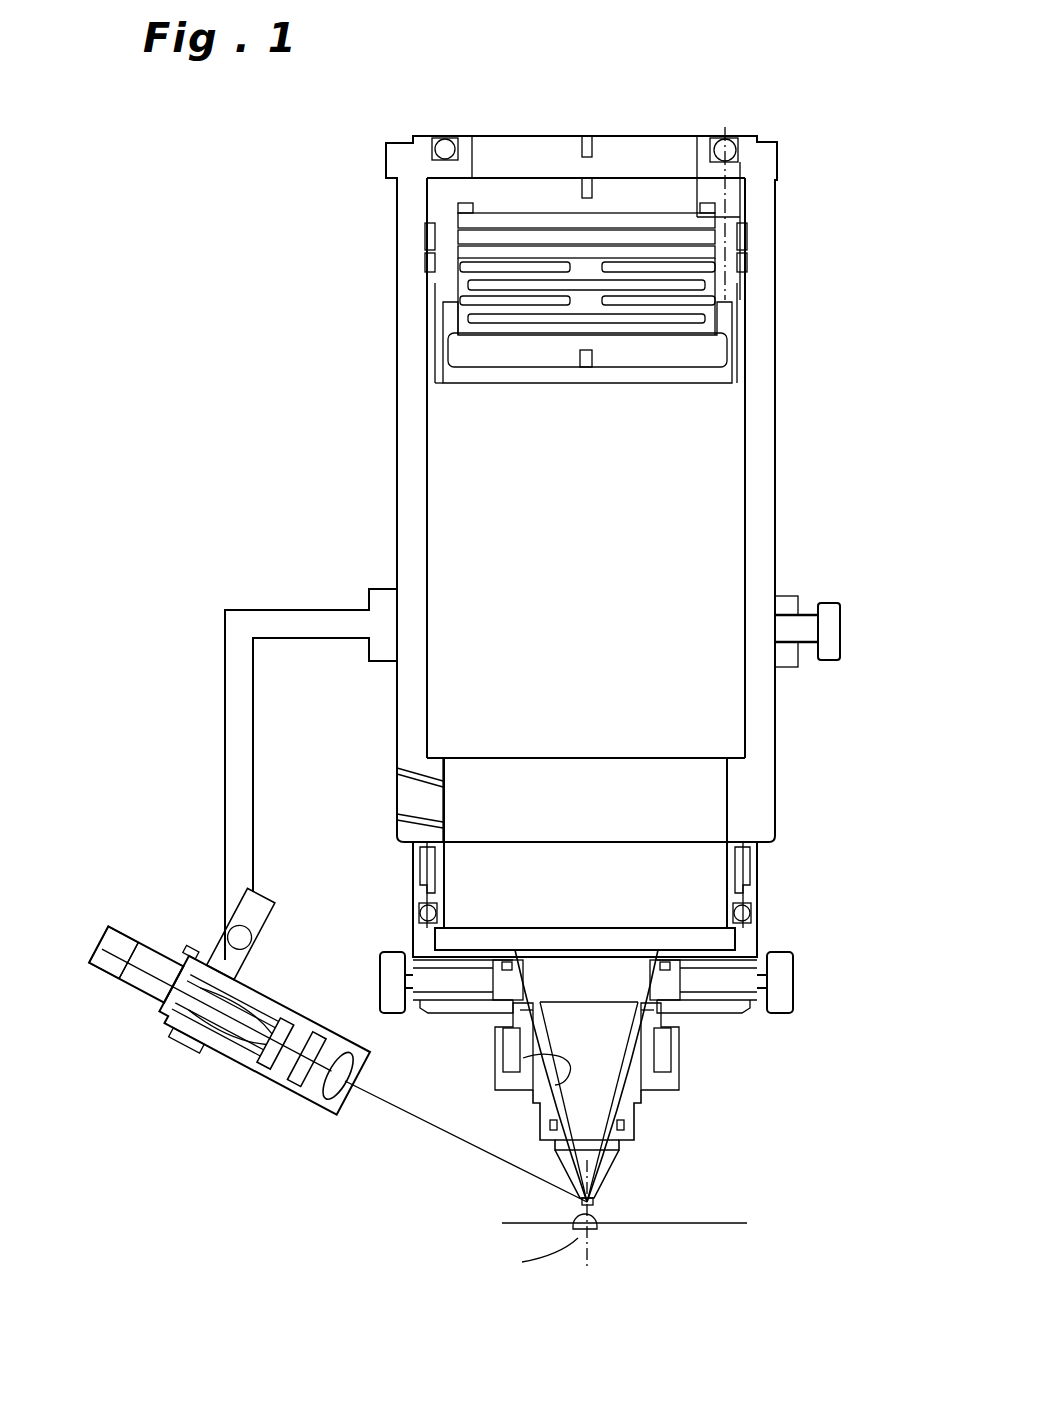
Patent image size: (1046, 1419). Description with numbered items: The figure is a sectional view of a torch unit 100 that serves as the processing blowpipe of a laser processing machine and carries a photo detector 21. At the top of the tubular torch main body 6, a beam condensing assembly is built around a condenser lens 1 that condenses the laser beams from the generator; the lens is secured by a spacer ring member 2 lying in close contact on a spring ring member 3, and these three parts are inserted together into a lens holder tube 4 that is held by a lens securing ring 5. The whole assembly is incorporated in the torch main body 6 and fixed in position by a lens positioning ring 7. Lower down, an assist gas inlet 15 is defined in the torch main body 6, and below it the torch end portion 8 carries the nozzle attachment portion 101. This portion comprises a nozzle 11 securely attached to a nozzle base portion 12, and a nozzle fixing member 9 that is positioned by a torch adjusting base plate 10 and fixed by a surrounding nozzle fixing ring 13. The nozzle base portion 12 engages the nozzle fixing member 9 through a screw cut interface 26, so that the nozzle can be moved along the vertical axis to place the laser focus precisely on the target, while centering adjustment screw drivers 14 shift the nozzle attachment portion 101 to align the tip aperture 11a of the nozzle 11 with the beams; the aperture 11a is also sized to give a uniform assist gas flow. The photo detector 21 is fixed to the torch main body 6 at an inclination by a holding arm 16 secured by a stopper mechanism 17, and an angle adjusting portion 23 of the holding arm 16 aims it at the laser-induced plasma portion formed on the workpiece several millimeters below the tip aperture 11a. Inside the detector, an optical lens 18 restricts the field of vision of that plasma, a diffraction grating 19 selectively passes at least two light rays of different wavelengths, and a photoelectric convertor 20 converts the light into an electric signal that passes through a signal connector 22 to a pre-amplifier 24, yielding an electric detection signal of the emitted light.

The torch unit 100 is at (634, 133).
The condenser lens 1 is at (425, 235).
The spacer ring member 2 is at (458, 222).
The spring ring member 3 is at (715, 272).
The lens holder tube 4 is at (730, 205).
The lens securing ring 5 is at (720, 352).
The torch main body 6 is at (412, 422).
The lens positioning ring 7 is at (735, 170).
The torch end portion 8 is at (417, 877).
The nozzle fixing member 9 is at (515, 1015).
The torch adjusting base plate 10 is at (712, 1003).
The nozzle 11 is at (590, 1212).
The tip aperture 11a is at (605, 1225).
The nozzle base portion 12 is at (607, 1172).
The nozzle fixing ring 13 is at (632, 1100).
The centering adjustment screw drivers 14 is at (783, 958).
The assist gas inlet 15 is at (397, 793).
The holding arm 16 is at (332, 612).
The stopper mechanism 17 is at (828, 603).
The optical lens 18 is at (348, 1095).
The diffraction grating 19 is at (293, 1080).
The photoelectric convertor 20 is at (272, 1065).
The photo detector 21 is at (228, 1052).
The signal connector 22 is at (136, 975).
The angle adjusting portion 23 is at (220, 957).
The pre-amplifier 24 is at (105, 947).
The screw cut interface 26 is at (556, 1086).
The nozzle attachment portion 101 is at (752, 1097).